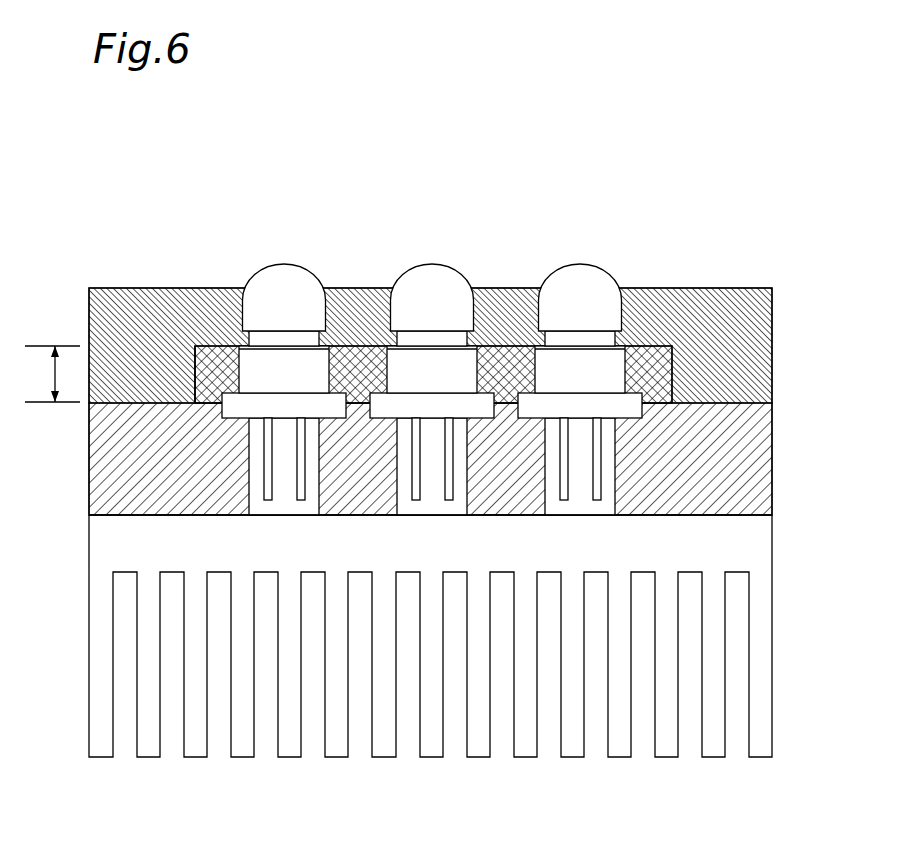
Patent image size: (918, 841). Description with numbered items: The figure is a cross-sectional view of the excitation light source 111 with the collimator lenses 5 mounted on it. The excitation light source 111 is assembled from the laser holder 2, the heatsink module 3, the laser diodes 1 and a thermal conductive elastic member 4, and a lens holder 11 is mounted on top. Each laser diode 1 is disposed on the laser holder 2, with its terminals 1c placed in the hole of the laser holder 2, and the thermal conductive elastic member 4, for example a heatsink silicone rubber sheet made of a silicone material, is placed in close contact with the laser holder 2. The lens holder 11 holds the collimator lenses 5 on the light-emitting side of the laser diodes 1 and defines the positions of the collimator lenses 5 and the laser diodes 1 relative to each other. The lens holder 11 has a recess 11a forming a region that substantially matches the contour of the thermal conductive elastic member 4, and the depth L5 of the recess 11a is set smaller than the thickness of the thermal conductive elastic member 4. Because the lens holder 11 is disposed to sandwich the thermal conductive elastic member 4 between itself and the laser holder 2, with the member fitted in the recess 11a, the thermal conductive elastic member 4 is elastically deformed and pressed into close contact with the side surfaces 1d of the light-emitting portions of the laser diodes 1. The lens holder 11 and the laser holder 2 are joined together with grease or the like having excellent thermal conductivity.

The excitation light source 111 is at (525, 212).
The lens holder 11 is at (737, 298).
The recess 11a is at (195, 363).
The thermal conductive elastic member 4 is at (210, 345).
The collimator lens 5 is at (598, 287).
The laser diode 1 is at (607, 365).
The side surface 1d is at (650, 388).
The terminal 1c is at (600, 458).
The laser holder 2 is at (130, 468).
The heatsink module 3 is at (737, 547).
The depth of the recess L5 is at (50, 374).